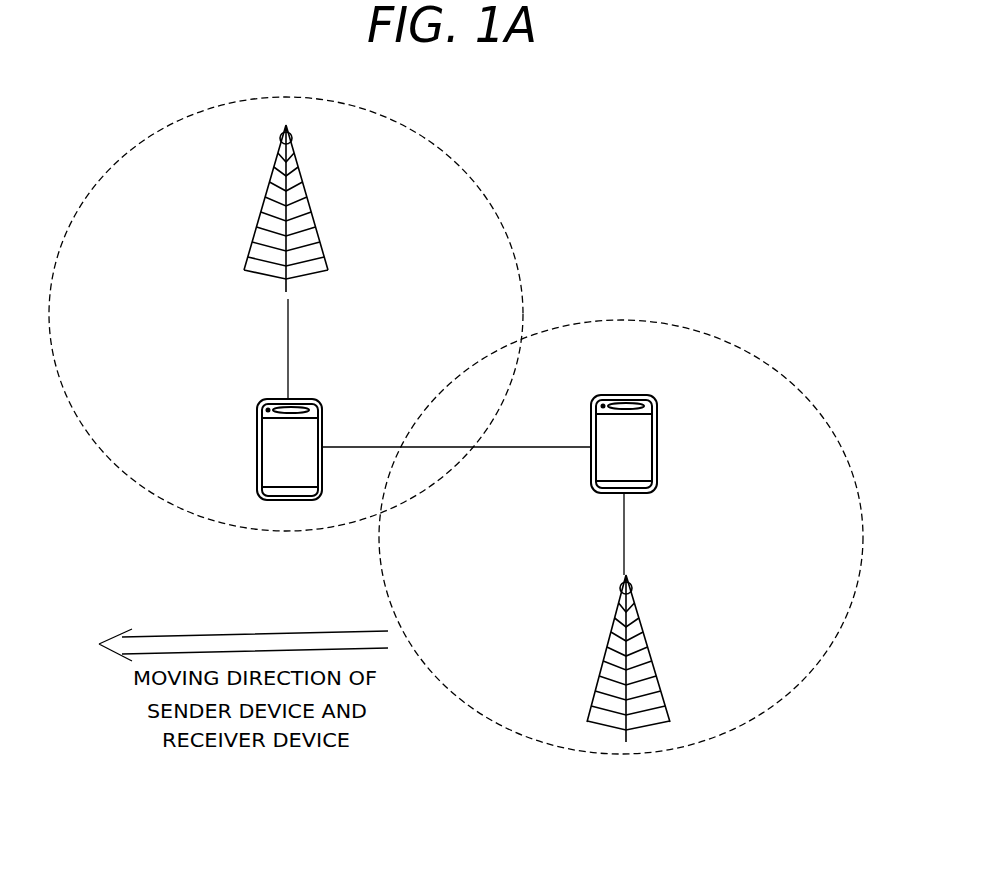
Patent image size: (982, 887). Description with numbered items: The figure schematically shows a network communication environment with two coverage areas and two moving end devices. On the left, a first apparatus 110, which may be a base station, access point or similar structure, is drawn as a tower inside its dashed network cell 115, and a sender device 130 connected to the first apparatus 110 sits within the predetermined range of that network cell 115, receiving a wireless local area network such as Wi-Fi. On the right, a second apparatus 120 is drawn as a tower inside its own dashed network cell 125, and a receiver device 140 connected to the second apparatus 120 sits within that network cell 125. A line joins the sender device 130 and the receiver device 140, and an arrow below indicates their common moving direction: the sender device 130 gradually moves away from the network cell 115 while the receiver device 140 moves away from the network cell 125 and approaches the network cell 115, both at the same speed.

The first apparatus 110 is at (310, 215).
The network cell 115 is at (412, 130).
The second apparatus 120 is at (652, 662).
The network cell 125 is at (750, 355).
The sender device 130 is at (298, 399).
The receiver device 140 is at (636, 395).